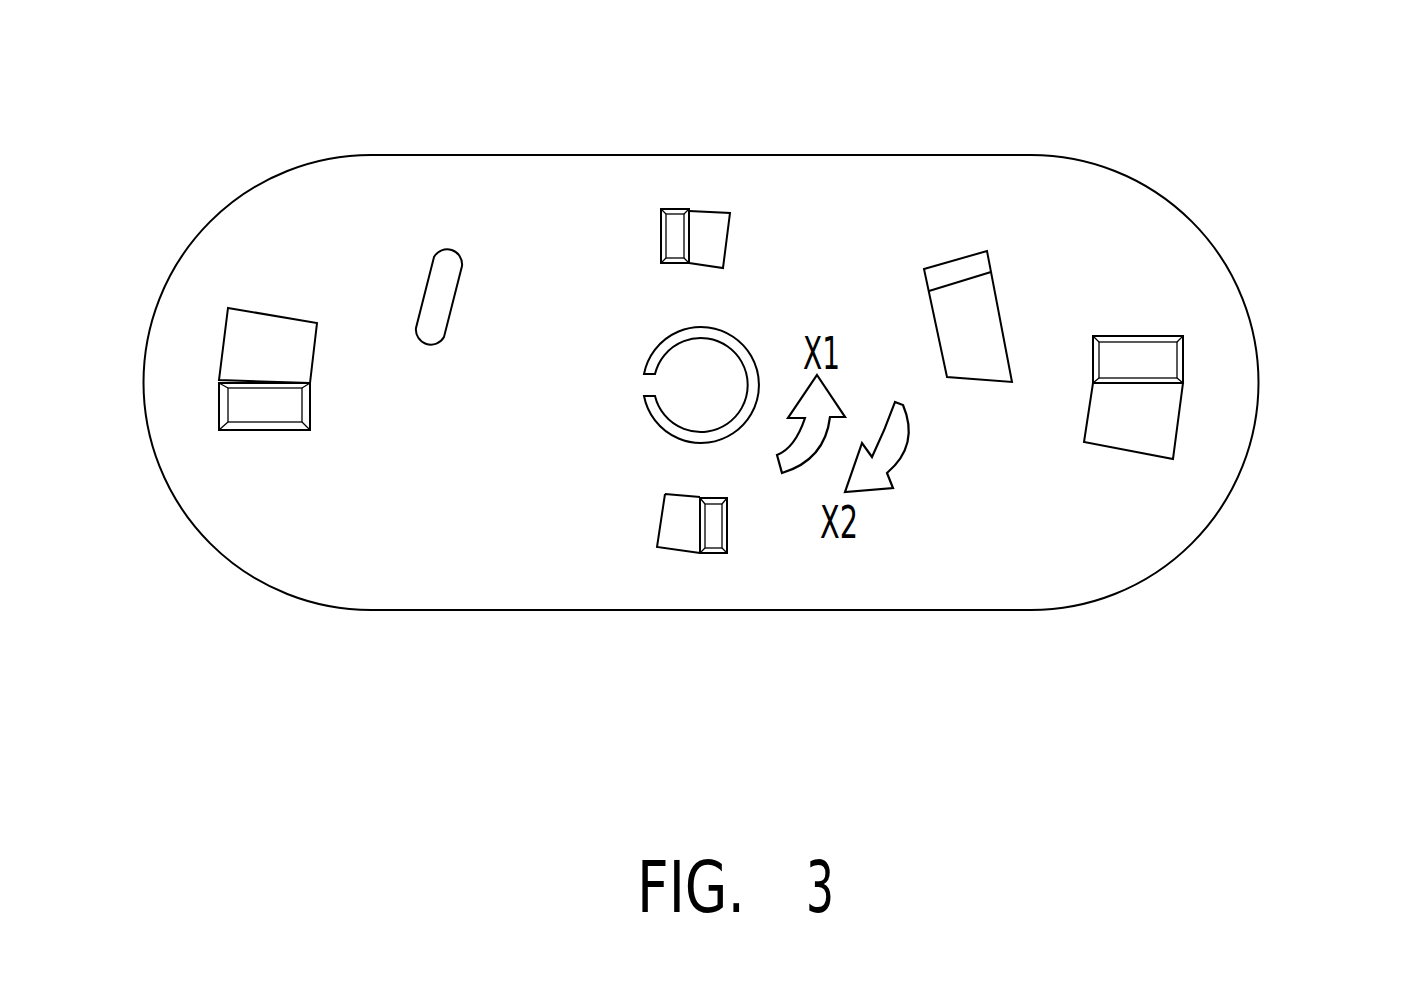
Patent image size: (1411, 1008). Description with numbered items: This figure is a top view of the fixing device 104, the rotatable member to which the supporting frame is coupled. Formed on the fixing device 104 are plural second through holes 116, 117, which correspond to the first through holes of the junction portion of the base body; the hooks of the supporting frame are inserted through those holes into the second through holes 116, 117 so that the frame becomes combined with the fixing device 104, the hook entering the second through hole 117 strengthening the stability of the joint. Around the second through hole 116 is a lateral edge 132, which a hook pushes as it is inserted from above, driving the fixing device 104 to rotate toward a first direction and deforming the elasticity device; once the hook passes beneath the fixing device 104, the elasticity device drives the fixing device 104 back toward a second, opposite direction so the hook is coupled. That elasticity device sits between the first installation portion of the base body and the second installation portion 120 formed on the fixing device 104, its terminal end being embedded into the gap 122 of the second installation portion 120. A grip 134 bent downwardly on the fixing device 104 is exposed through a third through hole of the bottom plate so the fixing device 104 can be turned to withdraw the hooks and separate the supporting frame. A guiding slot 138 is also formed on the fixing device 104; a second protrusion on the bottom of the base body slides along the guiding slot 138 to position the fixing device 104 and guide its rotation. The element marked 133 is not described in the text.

The fixing device 104 is at (970, 755).
The second through hole 116 is at (675, 517).
The second through hole 117 is at (270, 353).
The second installation portion 120 is at (720, 437).
The gap 122 is at (635, 383).
The lateral edge 132 is at (690, 235).
The support blocks 133 is at (257, 382).
The grip 134 is at (958, 270).
The guiding slot 138 is at (430, 328).